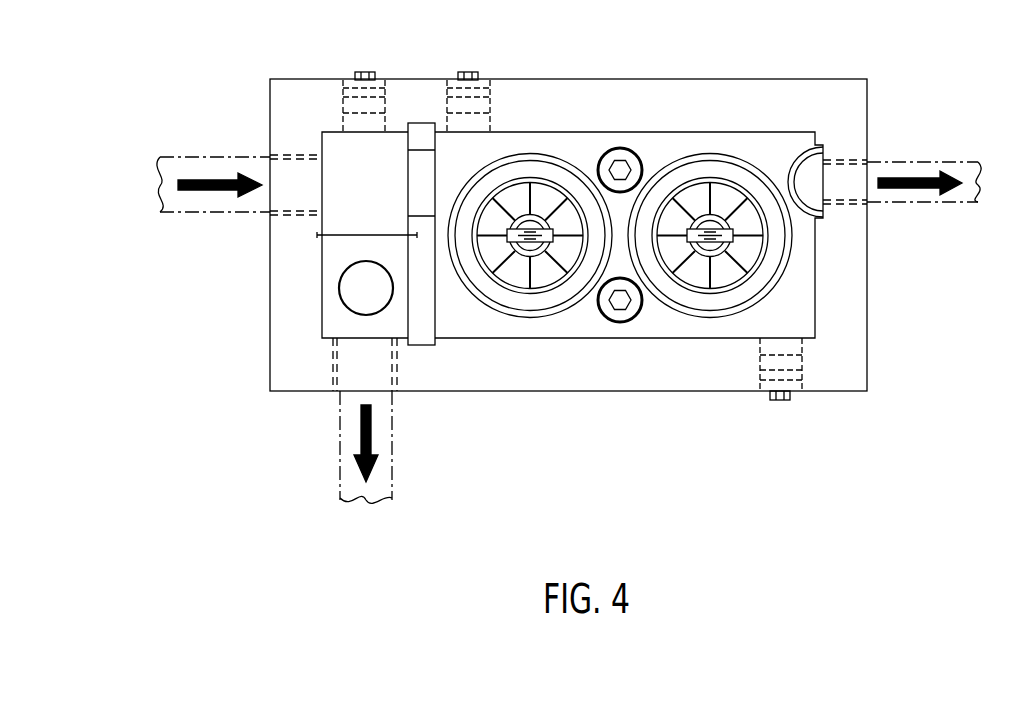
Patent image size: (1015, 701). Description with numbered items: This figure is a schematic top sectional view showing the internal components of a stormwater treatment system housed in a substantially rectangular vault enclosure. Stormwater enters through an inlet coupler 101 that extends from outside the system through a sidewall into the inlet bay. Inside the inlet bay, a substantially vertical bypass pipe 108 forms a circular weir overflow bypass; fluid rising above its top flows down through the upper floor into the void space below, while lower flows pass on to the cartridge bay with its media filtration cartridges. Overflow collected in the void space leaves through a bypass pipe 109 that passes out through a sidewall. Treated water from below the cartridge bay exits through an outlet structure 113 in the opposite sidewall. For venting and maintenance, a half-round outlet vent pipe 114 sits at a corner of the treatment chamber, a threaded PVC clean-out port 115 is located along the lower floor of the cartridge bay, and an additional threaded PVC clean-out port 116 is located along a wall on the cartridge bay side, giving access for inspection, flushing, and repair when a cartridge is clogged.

The inlet coupler 101 is at (270, 157).
The bypass pipe 108 is at (340, 290).
The bypass pipe 109 is at (338, 392).
The outlet structure 113 is at (868, 162).
The half-round outlet vent pipe 114 is at (823, 145).
The threaded PVC clean-out port 115 is at (630, 318).
The threaded PVC clean-out port 116 is at (800, 391).